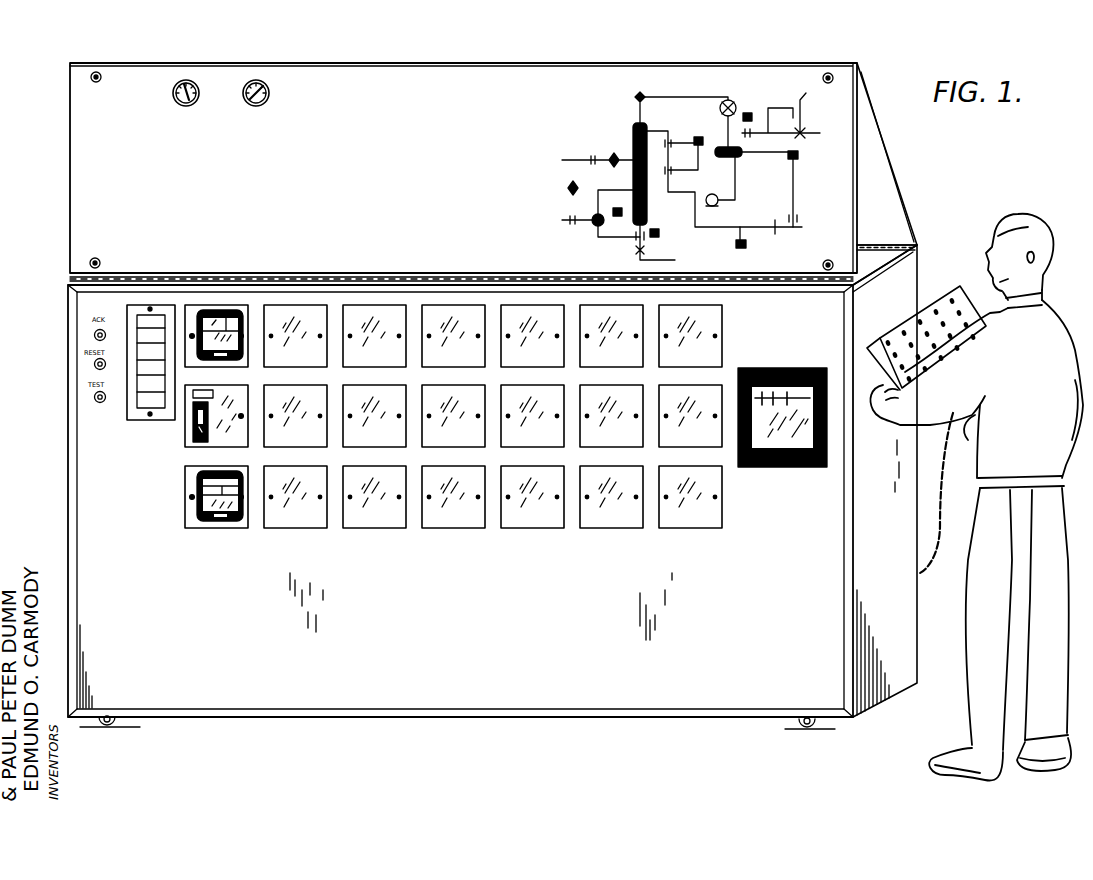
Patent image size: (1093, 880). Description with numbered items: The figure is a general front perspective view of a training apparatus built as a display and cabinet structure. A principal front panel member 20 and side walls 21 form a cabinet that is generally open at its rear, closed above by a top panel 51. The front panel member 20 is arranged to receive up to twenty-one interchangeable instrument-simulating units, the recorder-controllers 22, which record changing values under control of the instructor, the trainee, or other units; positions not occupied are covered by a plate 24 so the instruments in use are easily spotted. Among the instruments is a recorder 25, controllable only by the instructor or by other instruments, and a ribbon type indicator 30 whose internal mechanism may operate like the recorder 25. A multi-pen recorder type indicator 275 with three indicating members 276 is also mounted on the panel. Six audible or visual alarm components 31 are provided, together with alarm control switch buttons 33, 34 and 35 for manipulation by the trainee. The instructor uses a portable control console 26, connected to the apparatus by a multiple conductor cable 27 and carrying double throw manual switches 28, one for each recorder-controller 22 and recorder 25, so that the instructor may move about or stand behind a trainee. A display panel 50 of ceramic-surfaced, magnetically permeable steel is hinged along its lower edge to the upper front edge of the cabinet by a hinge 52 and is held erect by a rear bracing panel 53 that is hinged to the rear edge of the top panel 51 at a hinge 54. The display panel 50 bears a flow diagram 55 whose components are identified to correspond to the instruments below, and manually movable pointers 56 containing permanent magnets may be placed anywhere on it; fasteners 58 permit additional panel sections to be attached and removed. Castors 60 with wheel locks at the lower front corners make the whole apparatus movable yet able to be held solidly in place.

The front panel member 20 is at (471, 620).
The side walls 21 is at (891, 528).
The recording and controlling unit 22 is at (216, 532).
The plate 24 is at (290, 318).
The recorder 25 is at (208, 300).
The portable control console 26 is at (926, 319).
The multiple conductor cable 27 is at (932, 553).
The double throw manual switches 28 is at (909, 324).
The ribbon type indicator 30 is at (183, 433).
The alarm components 31 is at (140, 401).
The alarm control switch button 33 is at (93, 337).
The alarm control switch button 34 is at (93, 364).
The alarm control switch button 35 is at (93, 398).
The display panel 50 is at (68, 235).
The top panel 51 is at (878, 262).
The hinge 52 is at (393, 278).
The rear bracing panel 53 is at (883, 150).
The hinge 54 is at (870, 245).
The flow diagram 55 is at (624, 122).
The manually movable pointers 56 is at (198, 101).
The fasteners 58 is at (97, 83).
The castors 60 is at (108, 730).
The multi-pen recorder type indicator 275 is at (787, 468).
The indicating members 276 is at (787, 389).